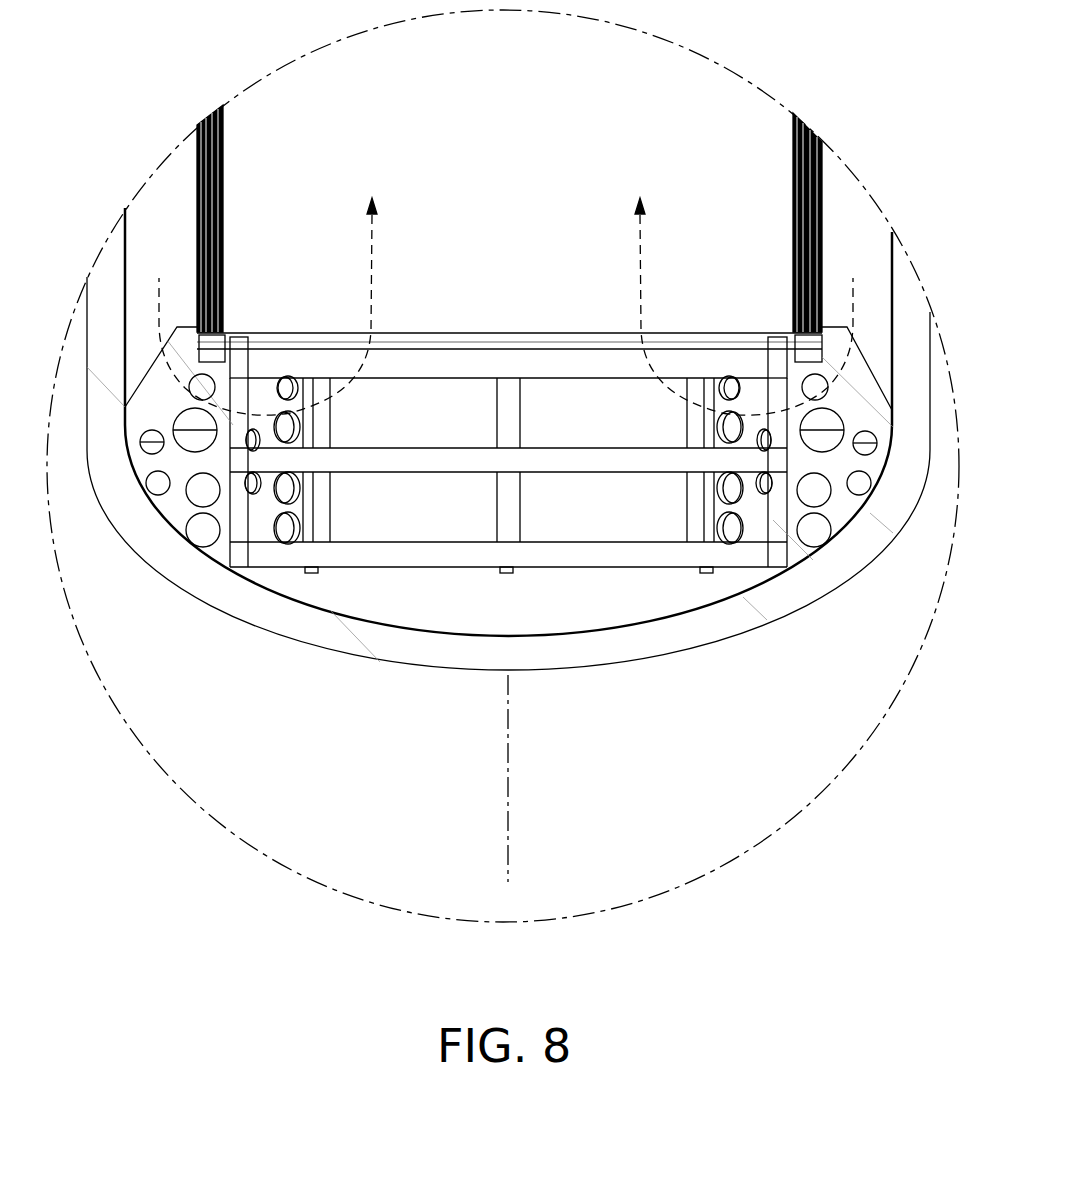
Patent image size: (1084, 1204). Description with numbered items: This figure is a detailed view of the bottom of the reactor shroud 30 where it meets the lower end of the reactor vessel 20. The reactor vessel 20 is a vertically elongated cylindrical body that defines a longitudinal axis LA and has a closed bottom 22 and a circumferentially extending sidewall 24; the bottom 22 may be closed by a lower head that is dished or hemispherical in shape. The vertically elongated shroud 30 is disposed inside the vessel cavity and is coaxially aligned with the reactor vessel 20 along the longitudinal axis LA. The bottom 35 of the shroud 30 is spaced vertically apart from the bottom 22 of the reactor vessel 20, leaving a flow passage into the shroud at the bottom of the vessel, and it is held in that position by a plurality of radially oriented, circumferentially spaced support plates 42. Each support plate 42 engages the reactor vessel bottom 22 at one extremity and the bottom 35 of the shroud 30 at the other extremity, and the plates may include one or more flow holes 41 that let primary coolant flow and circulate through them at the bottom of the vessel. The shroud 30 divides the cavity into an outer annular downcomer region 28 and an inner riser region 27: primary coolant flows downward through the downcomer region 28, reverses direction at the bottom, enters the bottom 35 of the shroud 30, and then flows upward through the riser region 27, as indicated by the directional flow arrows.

The reactor vessel 20 is at (186, 622).
The bottom 22 is at (300, 643).
The sidewall 24 is at (907, 290).
The riser region 27 is at (516, 154).
The downcomer region 28 is at (838, 195).
The shroud 30 is at (832, 168).
The bottom of shroud 35 is at (580, 350).
The flow holes 41 is at (842, 423).
The support plates 42 is at (493, 519).
The longitudinal axis LA is at (513, 828).